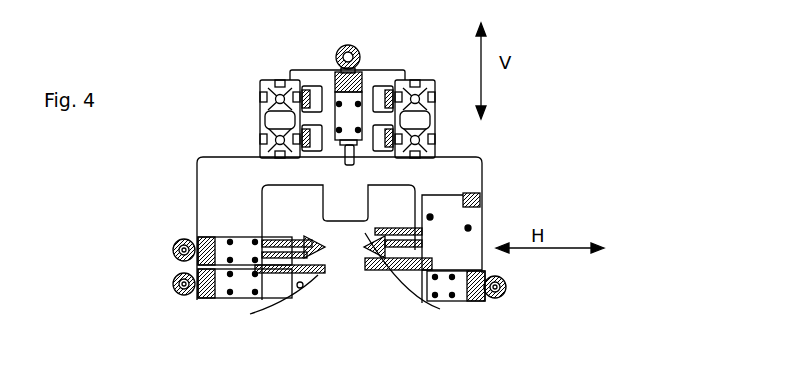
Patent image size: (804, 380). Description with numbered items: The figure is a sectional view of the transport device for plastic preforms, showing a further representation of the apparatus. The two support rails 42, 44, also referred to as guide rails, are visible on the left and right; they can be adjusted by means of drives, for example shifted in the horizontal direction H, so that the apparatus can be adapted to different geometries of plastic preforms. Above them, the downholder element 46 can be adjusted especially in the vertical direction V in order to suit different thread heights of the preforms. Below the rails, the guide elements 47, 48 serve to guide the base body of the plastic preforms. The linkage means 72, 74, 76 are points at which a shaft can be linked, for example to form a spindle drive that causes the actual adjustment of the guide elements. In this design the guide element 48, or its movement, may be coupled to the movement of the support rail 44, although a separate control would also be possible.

The support rail 42 is at (310, 243).
The support rail 44 is at (393, 222).
The downholder element 46 is at (345, 217).
The guide element 47 is at (250, 314).
The guide element 48 is at (440, 309).
The linkage means 72 is at (173, 249).
The linkage means 74 is at (173, 284).
The linkage means 76 is at (336, 55).